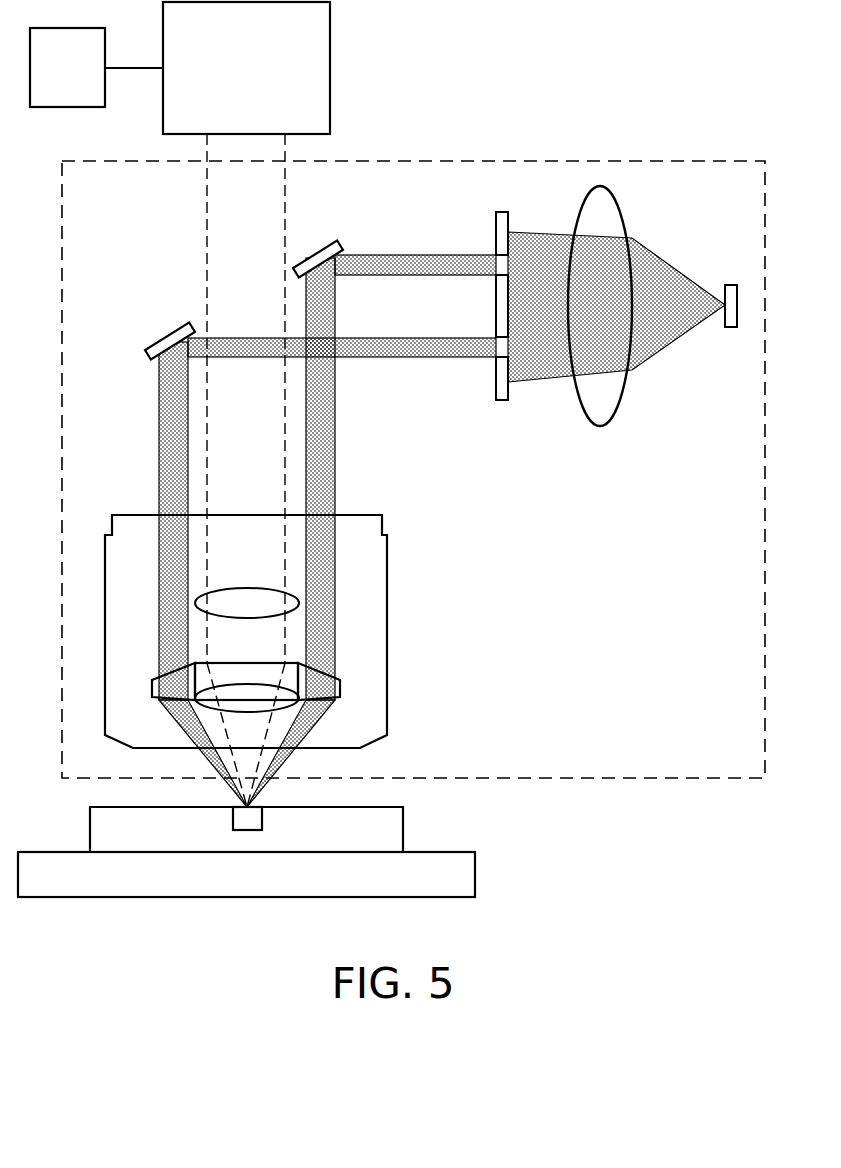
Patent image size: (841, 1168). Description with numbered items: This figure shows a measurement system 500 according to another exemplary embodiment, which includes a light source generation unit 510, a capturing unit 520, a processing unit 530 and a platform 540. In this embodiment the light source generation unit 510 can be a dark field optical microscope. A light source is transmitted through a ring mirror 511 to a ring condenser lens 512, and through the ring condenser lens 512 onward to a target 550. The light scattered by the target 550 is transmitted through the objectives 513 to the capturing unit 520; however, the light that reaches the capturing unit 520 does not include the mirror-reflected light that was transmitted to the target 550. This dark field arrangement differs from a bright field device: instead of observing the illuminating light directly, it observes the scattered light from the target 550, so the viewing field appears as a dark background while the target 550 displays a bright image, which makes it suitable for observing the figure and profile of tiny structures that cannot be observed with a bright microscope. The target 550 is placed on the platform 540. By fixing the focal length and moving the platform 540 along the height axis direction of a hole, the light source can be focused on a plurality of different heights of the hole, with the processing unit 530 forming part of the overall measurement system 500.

The measurement system 500 is at (641, 99).
The light source generation unit 510 is at (642, 778).
The ring mirror 511 is at (315, 247).
The ring condenser lens 512 is at (340, 688).
The objectives 513 is at (257, 716).
The capturing unit 520 is at (223, 83).
The processing unit 530 is at (91, 83).
The platform 540 is at (475, 872).
The target 550 is at (403, 830).